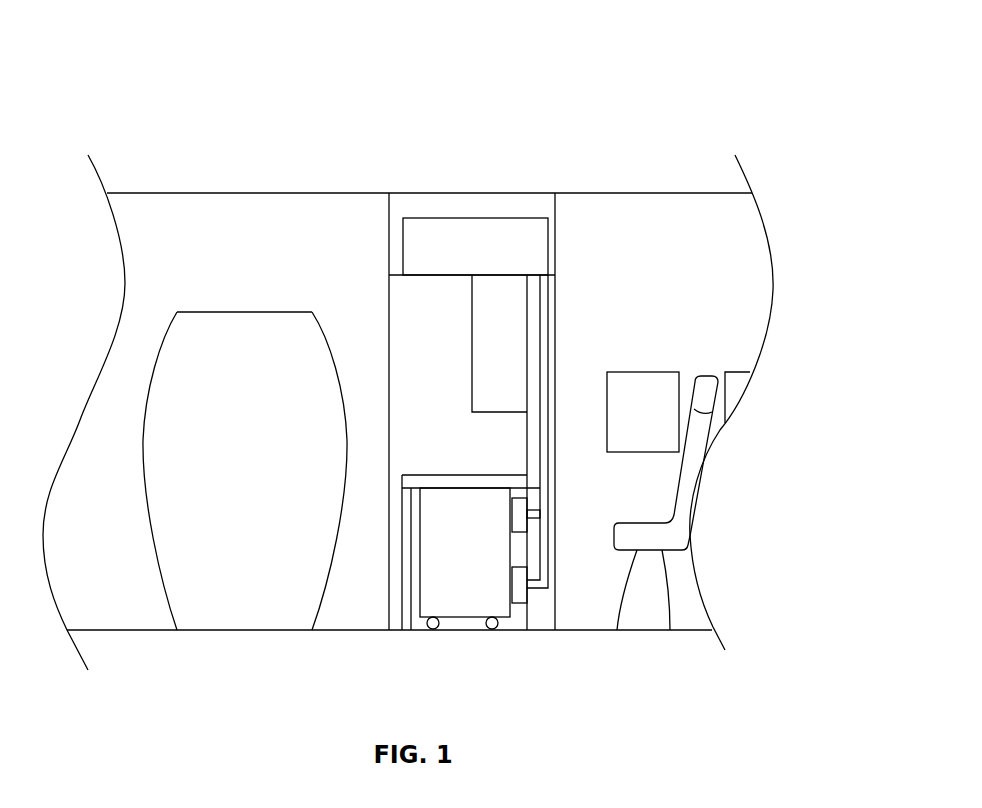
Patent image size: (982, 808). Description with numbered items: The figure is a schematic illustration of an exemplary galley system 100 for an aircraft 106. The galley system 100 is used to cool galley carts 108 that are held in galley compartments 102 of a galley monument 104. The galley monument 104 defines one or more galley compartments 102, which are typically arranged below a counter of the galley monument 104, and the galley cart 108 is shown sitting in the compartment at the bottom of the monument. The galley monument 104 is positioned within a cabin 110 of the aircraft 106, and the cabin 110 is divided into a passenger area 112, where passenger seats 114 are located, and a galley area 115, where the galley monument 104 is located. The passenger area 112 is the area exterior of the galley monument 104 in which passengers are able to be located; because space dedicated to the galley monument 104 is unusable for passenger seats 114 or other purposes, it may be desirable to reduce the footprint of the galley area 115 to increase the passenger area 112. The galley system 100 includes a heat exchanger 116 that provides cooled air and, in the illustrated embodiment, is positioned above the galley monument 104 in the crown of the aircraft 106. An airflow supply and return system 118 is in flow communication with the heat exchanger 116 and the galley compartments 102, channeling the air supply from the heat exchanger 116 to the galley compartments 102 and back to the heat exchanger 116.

The galley system 100 is at (441, 109).
The galley compartment 102 is at (514, 617).
The galley monument 104 is at (384, 485).
The aircraft 106 is at (241, 191).
The galley cart 108 is at (388, 233).
The cabin 110 is at (666, 241).
The passenger area 112 is at (713, 331).
The passenger seat 114 is at (688, 482).
The galley area 115 is at (432, 325).
The heat exchanger 116 is at (488, 238).
The airflow supply and return system 118 is at (549, 361).